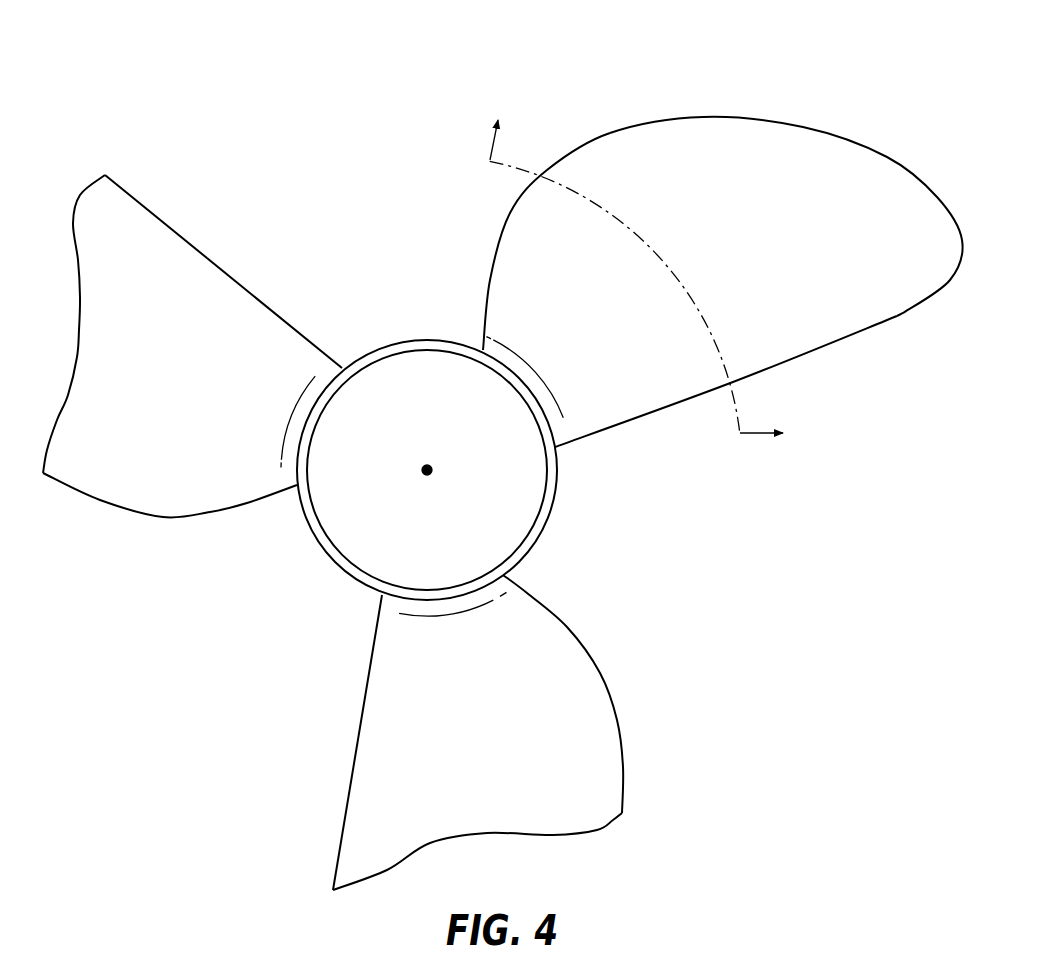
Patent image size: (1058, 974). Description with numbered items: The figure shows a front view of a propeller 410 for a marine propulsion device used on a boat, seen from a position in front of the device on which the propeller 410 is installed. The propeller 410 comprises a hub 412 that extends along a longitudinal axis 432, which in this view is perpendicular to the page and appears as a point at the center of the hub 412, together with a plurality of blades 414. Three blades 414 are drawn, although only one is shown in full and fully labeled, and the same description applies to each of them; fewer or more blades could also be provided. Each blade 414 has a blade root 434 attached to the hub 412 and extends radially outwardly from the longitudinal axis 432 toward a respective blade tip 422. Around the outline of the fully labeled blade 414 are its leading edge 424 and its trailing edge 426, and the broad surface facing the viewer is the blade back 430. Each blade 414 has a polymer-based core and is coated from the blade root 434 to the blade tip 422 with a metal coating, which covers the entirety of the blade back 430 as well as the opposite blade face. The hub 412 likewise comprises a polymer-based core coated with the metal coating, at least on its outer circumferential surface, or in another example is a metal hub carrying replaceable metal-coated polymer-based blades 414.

The propeller 410 is at (750, 90).
The hub 412 is at (542, 533).
The blade 414 is at (503, 485).
The blade tip 422 is at (898, 168).
The leading edge 424 is at (515, 221).
The trailing edge 426 is at (790, 363).
The blade back 430 is at (598, 300).
The longitudinal axis 432 is at (420, 468).
The blade root 434 is at (522, 380).